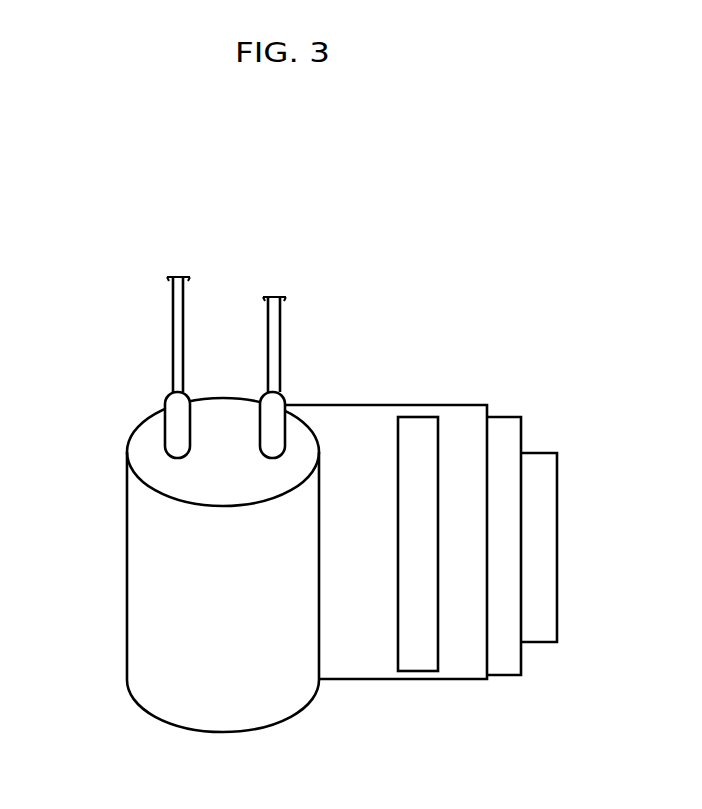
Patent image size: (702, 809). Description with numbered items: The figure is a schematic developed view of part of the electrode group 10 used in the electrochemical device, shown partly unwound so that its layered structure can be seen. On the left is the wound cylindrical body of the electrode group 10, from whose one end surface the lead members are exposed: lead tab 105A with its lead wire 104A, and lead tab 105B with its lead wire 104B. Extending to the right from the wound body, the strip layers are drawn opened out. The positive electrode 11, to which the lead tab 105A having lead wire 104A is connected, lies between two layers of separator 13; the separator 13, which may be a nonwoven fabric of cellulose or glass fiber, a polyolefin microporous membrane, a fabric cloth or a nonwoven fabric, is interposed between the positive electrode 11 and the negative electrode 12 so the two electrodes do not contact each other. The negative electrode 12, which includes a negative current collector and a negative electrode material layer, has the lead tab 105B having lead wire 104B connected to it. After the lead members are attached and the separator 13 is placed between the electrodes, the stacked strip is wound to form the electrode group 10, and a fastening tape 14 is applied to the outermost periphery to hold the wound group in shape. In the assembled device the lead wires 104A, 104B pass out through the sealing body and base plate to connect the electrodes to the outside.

The electrode group 10 is at (450, 283).
The positive electrode 11 is at (415, 655).
The negative electrode 12 is at (502, 667).
The separator 13 is at (357, 662).
The fastening tape 14 is at (537, 630).
The lead wire 104A is at (173, 315).
The lead wire 104B is at (281, 307).
The lead tab 105A is at (177, 407).
The lead tab 105B is at (283, 404).